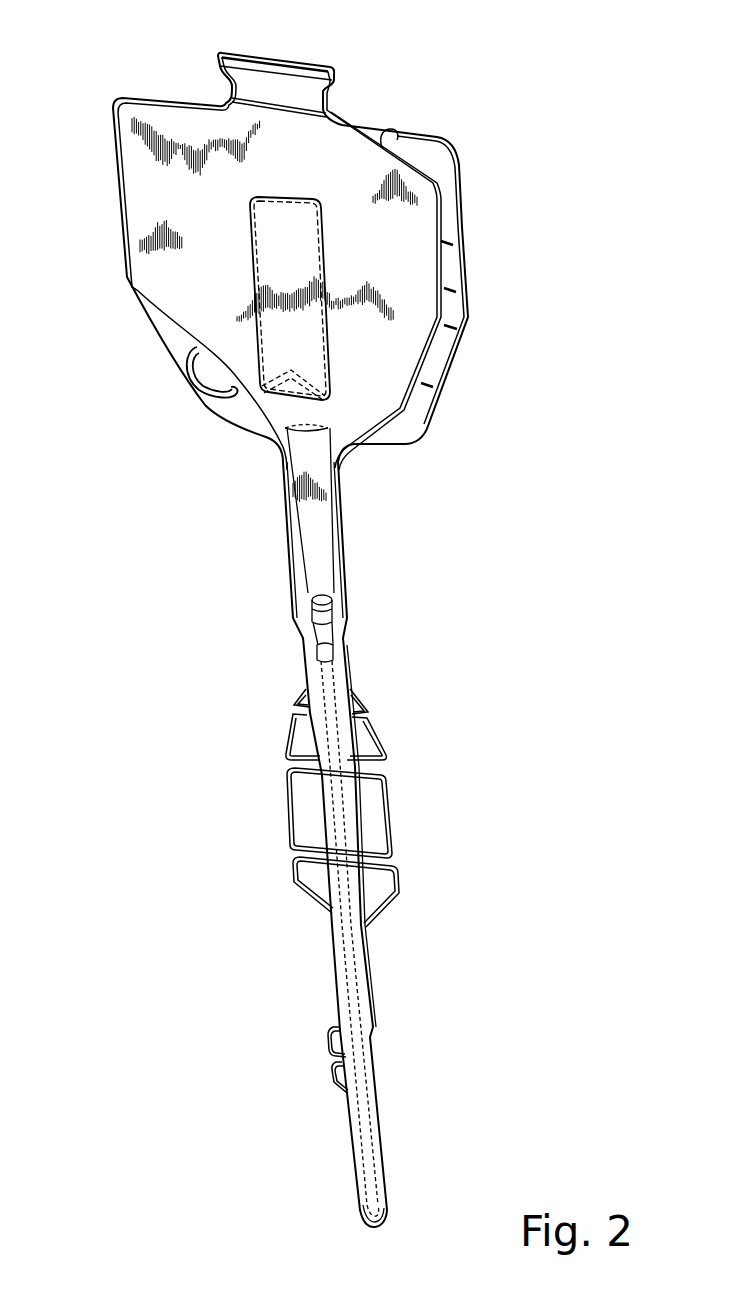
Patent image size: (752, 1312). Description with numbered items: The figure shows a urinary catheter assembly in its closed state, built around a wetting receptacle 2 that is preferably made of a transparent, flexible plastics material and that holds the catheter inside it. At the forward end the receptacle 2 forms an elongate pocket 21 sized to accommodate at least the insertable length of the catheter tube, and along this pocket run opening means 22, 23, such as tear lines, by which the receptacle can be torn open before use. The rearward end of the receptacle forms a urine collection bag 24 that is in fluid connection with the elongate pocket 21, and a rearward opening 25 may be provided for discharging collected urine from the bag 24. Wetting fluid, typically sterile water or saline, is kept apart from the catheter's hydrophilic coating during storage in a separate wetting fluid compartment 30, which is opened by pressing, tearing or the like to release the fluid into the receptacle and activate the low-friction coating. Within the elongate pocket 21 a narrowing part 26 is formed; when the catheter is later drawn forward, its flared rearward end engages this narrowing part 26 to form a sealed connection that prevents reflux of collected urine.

The wetting receptacle 2 is at (372, 571).
The elongate pocket 21 is at (360, 952).
The opening means 22 is at (390, 780).
The opening means 23 is at (392, 862).
The urine collection bag 24 is at (150, 272).
The rearward opening 25 is at (307, 63).
The narrowing part 26 is at (362, 752).
The wetting fluid compartment 30 is at (272, 243).